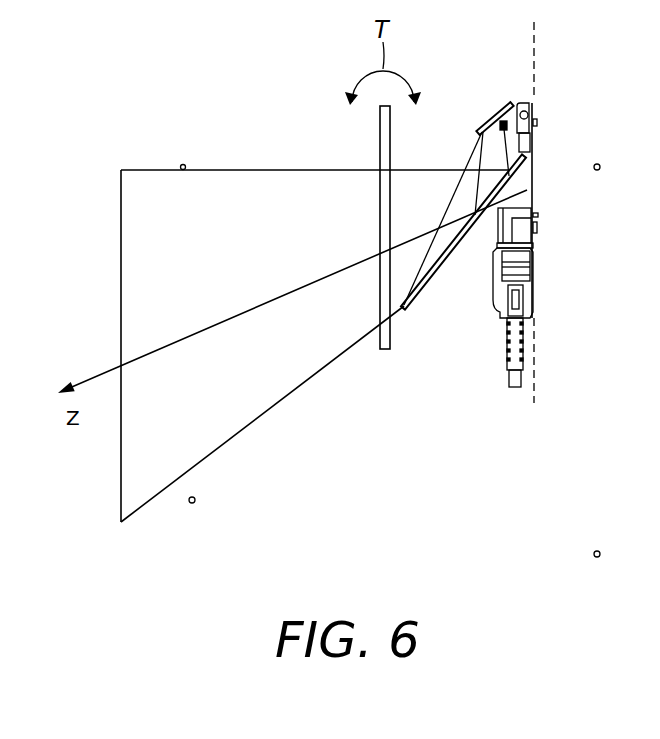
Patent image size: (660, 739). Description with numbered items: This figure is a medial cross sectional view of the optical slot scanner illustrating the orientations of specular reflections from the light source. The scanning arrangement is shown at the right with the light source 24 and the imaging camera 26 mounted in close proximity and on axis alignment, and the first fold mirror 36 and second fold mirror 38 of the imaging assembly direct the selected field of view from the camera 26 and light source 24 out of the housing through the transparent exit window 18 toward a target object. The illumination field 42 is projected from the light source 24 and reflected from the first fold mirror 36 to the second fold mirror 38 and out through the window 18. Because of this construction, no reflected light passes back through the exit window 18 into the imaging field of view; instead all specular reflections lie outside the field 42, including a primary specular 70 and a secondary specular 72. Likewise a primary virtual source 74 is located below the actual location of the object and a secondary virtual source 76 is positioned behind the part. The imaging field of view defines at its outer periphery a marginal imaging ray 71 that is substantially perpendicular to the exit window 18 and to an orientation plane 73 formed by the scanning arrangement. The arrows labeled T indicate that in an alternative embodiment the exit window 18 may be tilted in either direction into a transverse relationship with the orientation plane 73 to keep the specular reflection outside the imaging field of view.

The transparent window 18 is at (379, 141).
The light source 24 is at (530, 113).
The imaging camera 26 is at (508, 103).
The first fold mirror 36 is at (497, 121).
The second fold mirror 38 is at (432, 268).
The illumination field 42 is at (170, 437).
The primary specular 70 is at (183, 164).
The marginal imaging ray 71 is at (253, 168).
The secondary specular 72 is at (195, 500).
The orientation plane 73 is at (538, 68).
The primary virtual source 74 is at (600, 166).
The secondary virtual source 76 is at (600, 553).